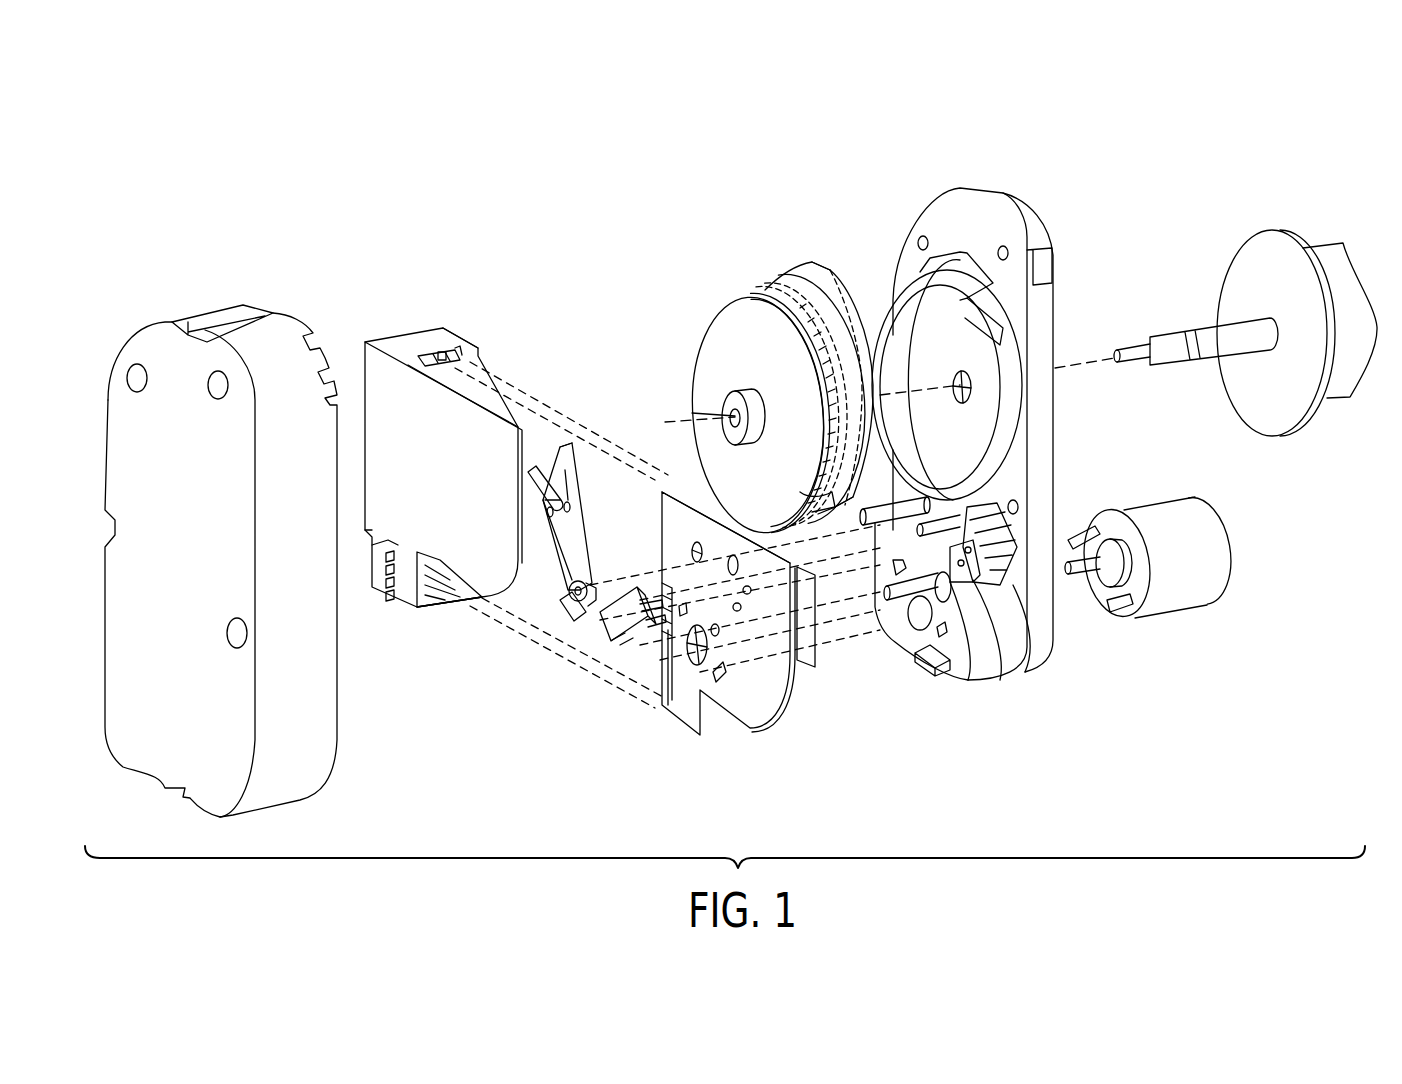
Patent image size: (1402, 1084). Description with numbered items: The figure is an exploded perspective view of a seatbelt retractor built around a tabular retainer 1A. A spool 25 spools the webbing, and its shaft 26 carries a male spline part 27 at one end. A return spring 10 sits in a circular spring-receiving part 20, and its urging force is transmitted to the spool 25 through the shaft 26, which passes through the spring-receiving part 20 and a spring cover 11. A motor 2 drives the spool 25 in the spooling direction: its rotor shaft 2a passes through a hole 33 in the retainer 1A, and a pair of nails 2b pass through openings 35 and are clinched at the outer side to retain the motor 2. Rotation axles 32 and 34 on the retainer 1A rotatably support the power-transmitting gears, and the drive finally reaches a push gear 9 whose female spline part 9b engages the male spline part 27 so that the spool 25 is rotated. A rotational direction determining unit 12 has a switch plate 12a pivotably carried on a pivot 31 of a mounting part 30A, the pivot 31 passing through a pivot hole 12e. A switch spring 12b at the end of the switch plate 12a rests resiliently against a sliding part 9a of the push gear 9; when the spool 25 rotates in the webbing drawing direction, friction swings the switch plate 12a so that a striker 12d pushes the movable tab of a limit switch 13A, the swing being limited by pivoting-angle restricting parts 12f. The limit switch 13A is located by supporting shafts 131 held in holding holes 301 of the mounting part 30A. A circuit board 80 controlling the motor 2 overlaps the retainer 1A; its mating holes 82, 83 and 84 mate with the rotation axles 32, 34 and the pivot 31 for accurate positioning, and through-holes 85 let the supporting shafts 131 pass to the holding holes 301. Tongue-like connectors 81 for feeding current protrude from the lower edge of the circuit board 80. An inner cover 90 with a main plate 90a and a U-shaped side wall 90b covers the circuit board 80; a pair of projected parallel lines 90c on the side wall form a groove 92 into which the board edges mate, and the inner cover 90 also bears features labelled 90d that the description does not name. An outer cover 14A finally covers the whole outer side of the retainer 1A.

The tabular retainer 1A is at (1032, 215).
The motor 2 is at (1205, 583).
The rotor shaft 2a is at (1080, 572).
The nails 2b is at (1085, 535).
The push gear 9 is at (745, 305).
The sliding part 9a is at (752, 390).
The female spline part 9b is at (736, 440).
The return spring 10 is at (785, 278).
The spring cover 11 is at (808, 268).
The rotational direction determining unit 12 is at (592, 495).
The switch plate 12a is at (552, 518).
The switch spring 12b is at (548, 490).
The striker 12d is at (566, 618).
The pivot hole 12e is at (575, 602).
The pivoting-angle restricting parts 12f is at (575, 455).
The limit switch 13A is at (622, 610).
The supporting shafts 131 is at (630, 645).
The outer cover 14A is at (282, 310).
The spring-receiving part 20 is at (960, 295).
The spool 25 is at (1270, 220).
The shaft 26 is at (1236, 340).
The male spline part 27 is at (1130, 352).
The mounting part 30A is at (1040, 560).
The pivot 31 is at (950, 505).
The rotation axle 32 is at (905, 500).
The hole 33 is at (898, 612).
The rotation axle 34 is at (998, 680).
The openings 35 is at (945, 665).
The holding holes 301 is at (1030, 652).
The circuit board 80 is at (758, 742).
The connectors 81 is at (668, 682).
The mating hole 82 is at (706, 503).
The mating hole 83 is at (692, 550).
The mating hole 84 is at (718, 632).
The through-holes 85 is at (750, 595).
The inner cover 90 is at (418, 298).
The main plate 90a is at (420, 608).
The side wall 90b is at (393, 340).
The projected parallel lines 90c is at (480, 352).
The slots 90d is at (390, 598).
The groove 92 is at (445, 350).